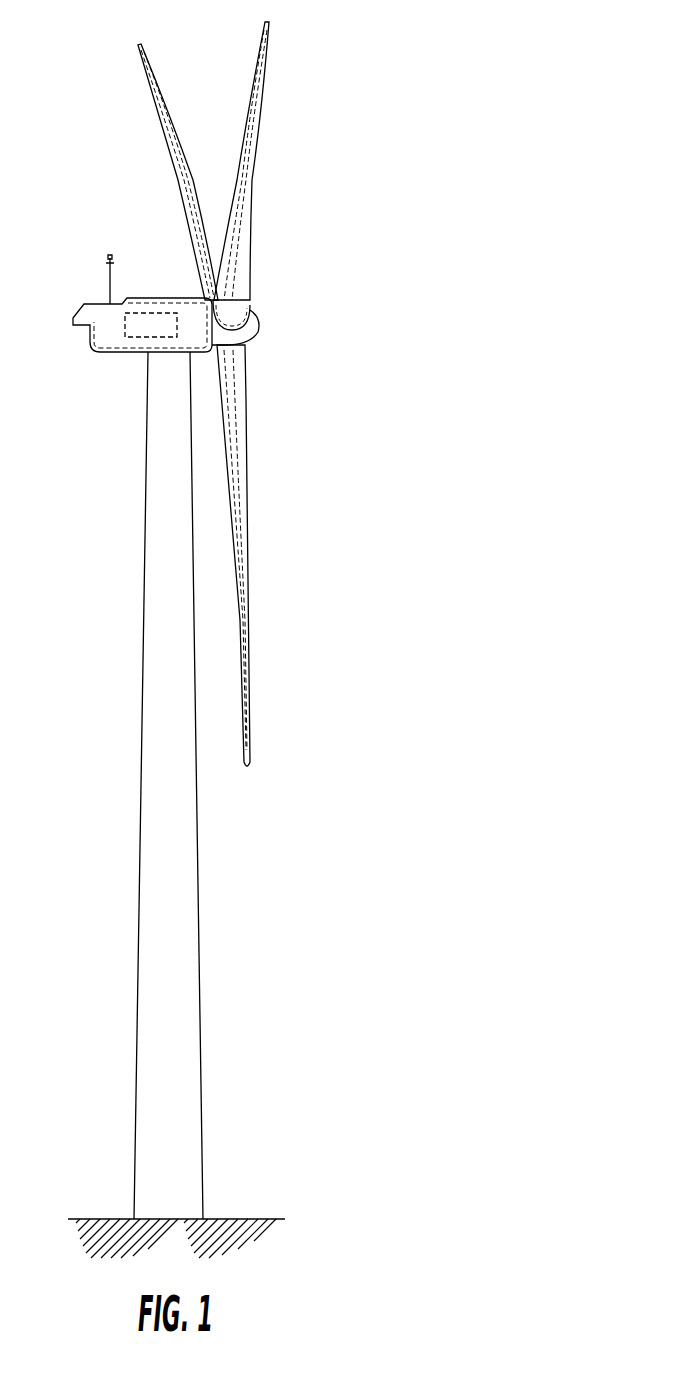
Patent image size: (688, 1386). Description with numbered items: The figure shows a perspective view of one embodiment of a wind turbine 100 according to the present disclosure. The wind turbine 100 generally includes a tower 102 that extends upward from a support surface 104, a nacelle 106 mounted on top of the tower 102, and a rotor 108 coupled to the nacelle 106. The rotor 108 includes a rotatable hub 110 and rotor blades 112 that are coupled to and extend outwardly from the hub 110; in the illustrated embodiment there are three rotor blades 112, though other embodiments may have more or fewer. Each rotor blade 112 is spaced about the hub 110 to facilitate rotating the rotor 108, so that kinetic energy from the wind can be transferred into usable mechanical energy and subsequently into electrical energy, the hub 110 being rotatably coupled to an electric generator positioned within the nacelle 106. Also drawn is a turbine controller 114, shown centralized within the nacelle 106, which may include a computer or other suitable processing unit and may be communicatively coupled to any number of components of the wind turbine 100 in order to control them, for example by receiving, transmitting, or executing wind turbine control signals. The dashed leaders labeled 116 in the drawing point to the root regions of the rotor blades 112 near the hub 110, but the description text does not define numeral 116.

The wind turbine 100 is at (410, 120).
The tower 102 is at (180, 857).
The support surface 104 is at (113, 1218).
The nacelle 106 is at (118, 353).
The rotor 108 is at (305, 276).
The rotatable hub 110 is at (258, 318).
The rotor blade 112 is at (250, 143).
The turbine controller 114 is at (163, 313).
The blade root 116 is at (181, 192).